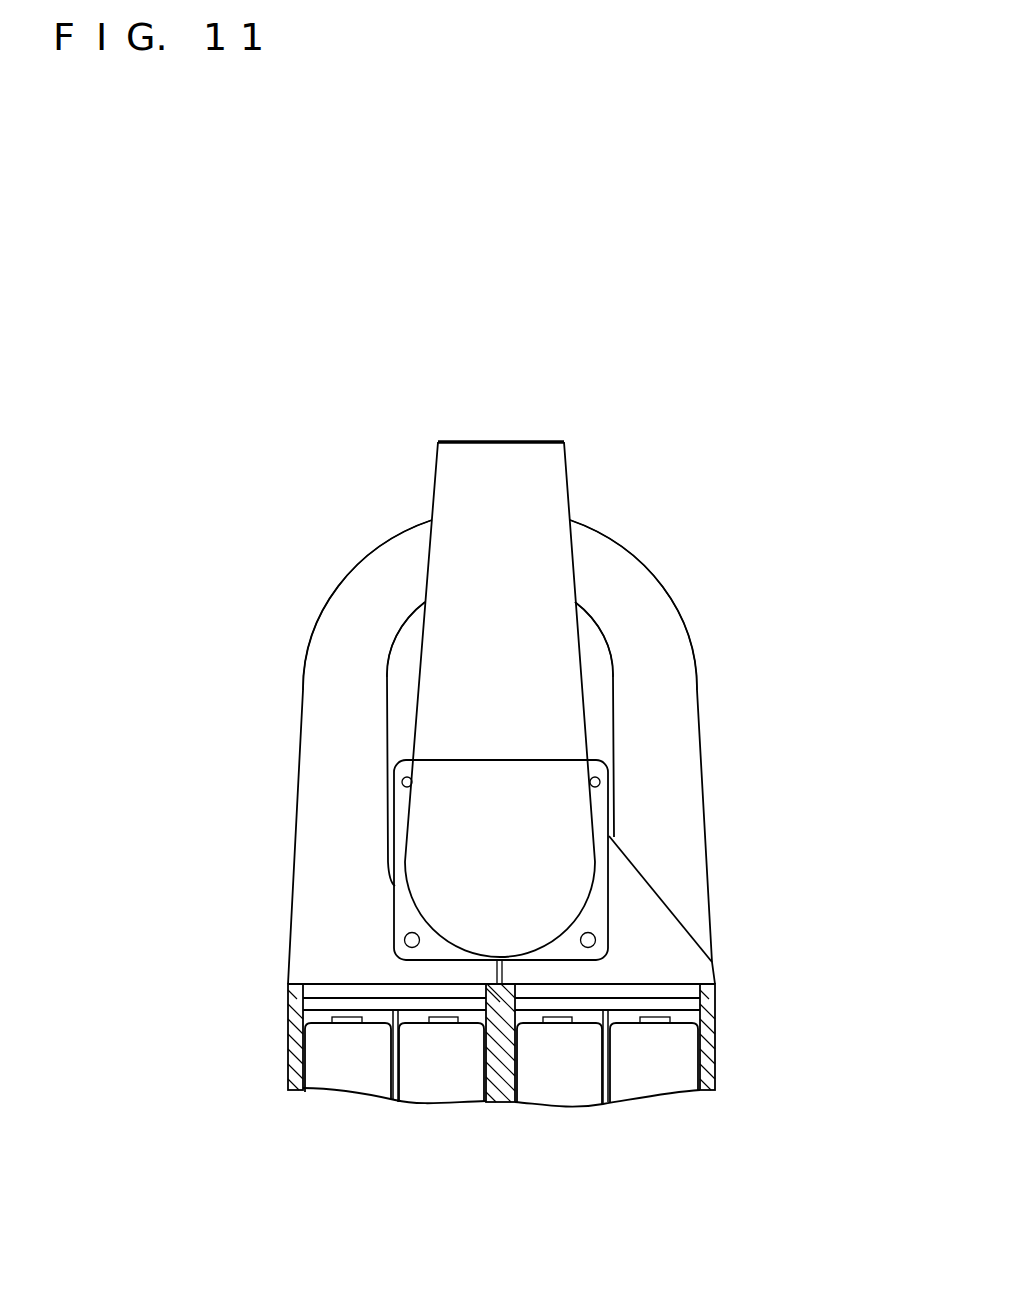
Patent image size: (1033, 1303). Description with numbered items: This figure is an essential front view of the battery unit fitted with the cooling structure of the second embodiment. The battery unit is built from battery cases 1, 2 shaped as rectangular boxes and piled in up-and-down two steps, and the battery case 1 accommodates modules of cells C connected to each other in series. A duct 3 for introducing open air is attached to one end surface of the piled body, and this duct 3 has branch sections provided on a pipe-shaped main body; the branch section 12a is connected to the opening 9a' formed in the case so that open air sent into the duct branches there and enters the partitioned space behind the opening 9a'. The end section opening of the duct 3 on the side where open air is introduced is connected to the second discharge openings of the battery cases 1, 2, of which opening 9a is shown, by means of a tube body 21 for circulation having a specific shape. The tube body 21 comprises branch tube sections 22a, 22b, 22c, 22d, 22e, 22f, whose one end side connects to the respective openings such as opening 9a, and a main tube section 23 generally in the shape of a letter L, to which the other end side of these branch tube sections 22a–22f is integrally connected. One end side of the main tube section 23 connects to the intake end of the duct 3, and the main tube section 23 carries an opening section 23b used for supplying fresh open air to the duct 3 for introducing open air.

The tube body for circulation 21 is at (538, 428).
The branch tube section 22a is at (309, 652).
The branch tube section 22b is at (635, 560).
The branch tube section 22c is at (367, 605).
The branch tube section 22d is at (633, 605).
The branch tube section 22e is at (406, 639).
The branch tube section 22f is at (594, 639).
The main tube section 23 is at (568, 475).
The opening section 23b is at (463, 441).
The duct for introducing open air 3 is at (609, 808).
The branch section 12a is at (680, 922).
The battery case 1 is at (288, 1065).
The battery case 2 is at (717, 1040).
The opening (second discharge opening) 9a is at (360, 969).
The opening 9a' is at (653, 979).
The cell C is at (340, 1068).